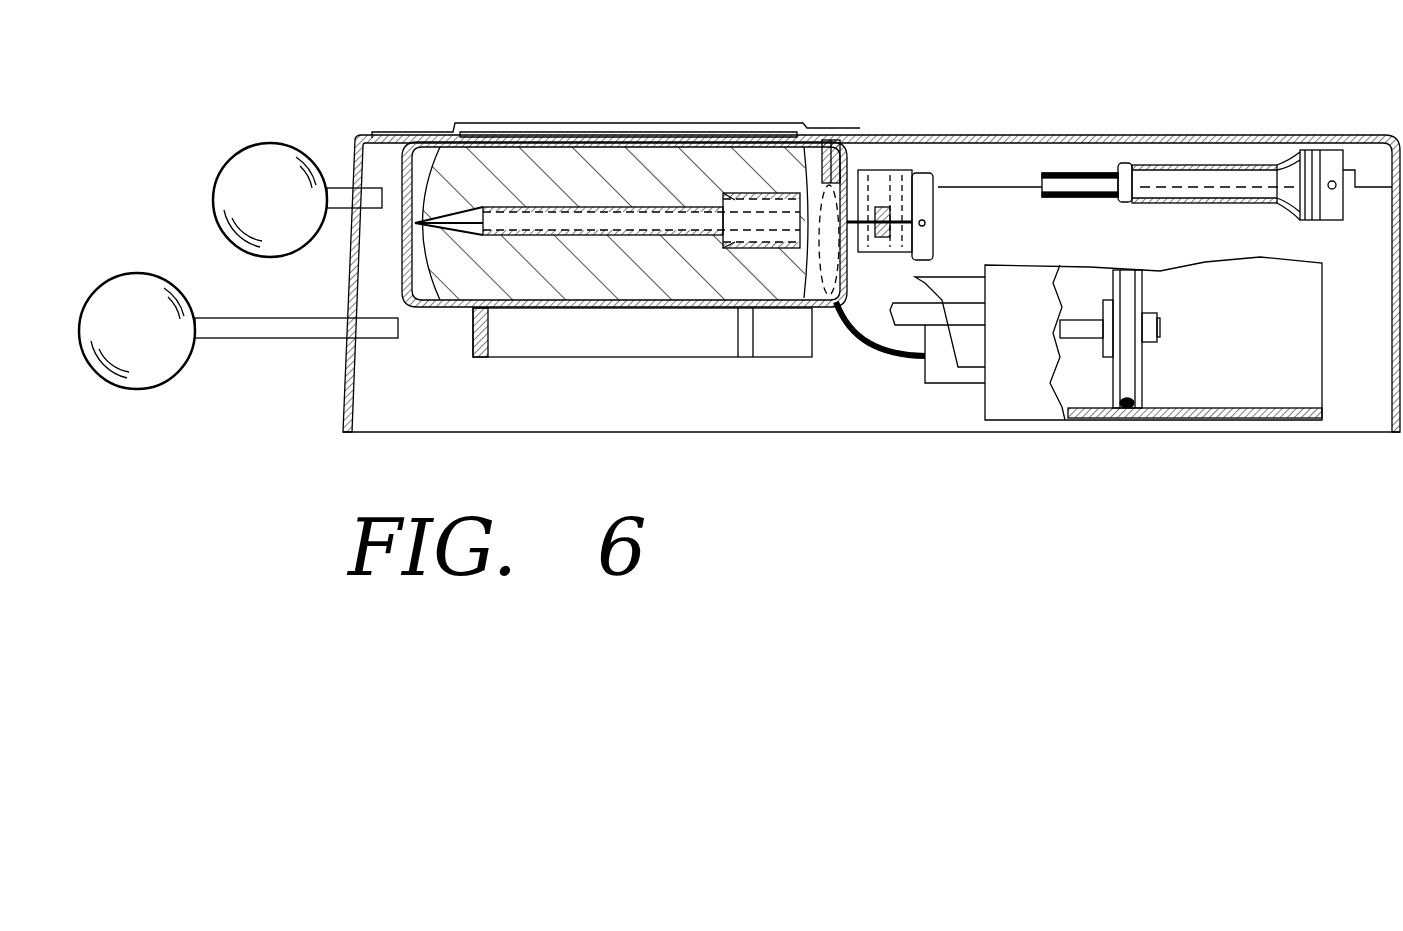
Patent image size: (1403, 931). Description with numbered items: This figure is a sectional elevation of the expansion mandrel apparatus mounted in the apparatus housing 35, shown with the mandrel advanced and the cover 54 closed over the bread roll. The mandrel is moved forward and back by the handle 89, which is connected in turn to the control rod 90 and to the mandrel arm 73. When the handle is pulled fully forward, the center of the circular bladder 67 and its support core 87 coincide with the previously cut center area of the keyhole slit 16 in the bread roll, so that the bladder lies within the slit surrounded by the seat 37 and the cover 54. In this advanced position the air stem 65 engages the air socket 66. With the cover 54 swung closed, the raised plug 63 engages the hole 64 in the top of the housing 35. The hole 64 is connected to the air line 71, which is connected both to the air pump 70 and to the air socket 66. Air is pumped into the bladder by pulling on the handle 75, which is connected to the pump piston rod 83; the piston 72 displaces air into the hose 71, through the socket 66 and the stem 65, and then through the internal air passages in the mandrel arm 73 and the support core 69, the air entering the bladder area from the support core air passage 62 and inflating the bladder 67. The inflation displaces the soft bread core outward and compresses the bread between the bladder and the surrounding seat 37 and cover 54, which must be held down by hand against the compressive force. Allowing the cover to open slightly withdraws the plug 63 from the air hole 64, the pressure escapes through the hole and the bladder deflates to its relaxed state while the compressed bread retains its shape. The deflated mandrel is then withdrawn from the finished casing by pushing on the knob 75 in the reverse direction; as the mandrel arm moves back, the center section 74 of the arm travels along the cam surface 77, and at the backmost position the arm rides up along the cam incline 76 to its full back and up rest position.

The keyhole slit 16 is at (624, 364).
The apparatus housing 35 is at (871, 229).
The seat 37 is at (615, 161).
The cover 54 is at (616, 78).
The internal air passage 62 is at (740, 311).
The raised plug 63 is at (848, 106).
The hole 64 is at (803, 161).
The air stem 65 is at (917, 138).
The air socket 66 is at (883, 149).
The circular bladder 67 is at (611, 167).
The support core 69 is at (697, 138).
The air pump 70 is at (1106, 398).
The air line 71 is at (880, 415).
The piston 72 is at (1163, 339).
The mandrel arm 73 is at (1144, 238).
The center section 74 is at (1164, 115).
The handle 75 is at (127, 288).
The cam incline 76 is at (1216, 135).
The cam surface 77 is at (1034, 122).
The pump piston rod 83 is at (296, 388).
The support core 87 is at (607, 317).
The handle 89 is at (247, 168).
The control rod 90 is at (334, 120).